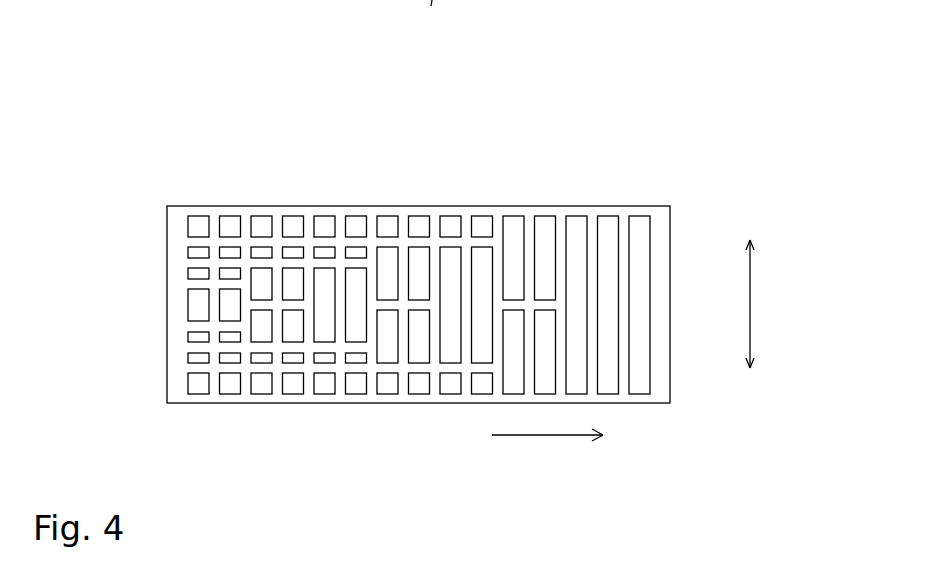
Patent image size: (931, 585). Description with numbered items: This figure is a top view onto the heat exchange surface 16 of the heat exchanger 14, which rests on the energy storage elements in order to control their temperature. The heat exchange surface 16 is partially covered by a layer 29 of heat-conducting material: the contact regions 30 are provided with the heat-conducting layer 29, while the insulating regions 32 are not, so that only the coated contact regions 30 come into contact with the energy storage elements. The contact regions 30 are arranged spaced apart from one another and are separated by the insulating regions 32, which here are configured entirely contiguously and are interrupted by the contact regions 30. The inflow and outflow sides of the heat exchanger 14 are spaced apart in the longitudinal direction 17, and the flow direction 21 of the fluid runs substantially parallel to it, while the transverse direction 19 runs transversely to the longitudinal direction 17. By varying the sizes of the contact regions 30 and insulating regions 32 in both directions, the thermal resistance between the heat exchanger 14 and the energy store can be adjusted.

The heat exchanger 14 is at (476, 276).
The heat exchange surface 16 is at (662, 250).
The longitudinal direction 17 is at (539, 481).
The flow direction 21 is at (543, 442).
The transverse direction 19 is at (752, 302).
The layer 29 is at (450, 223).
The contact regions 30 is at (322, 222).
The insulating regions 32 is at (403, 213).